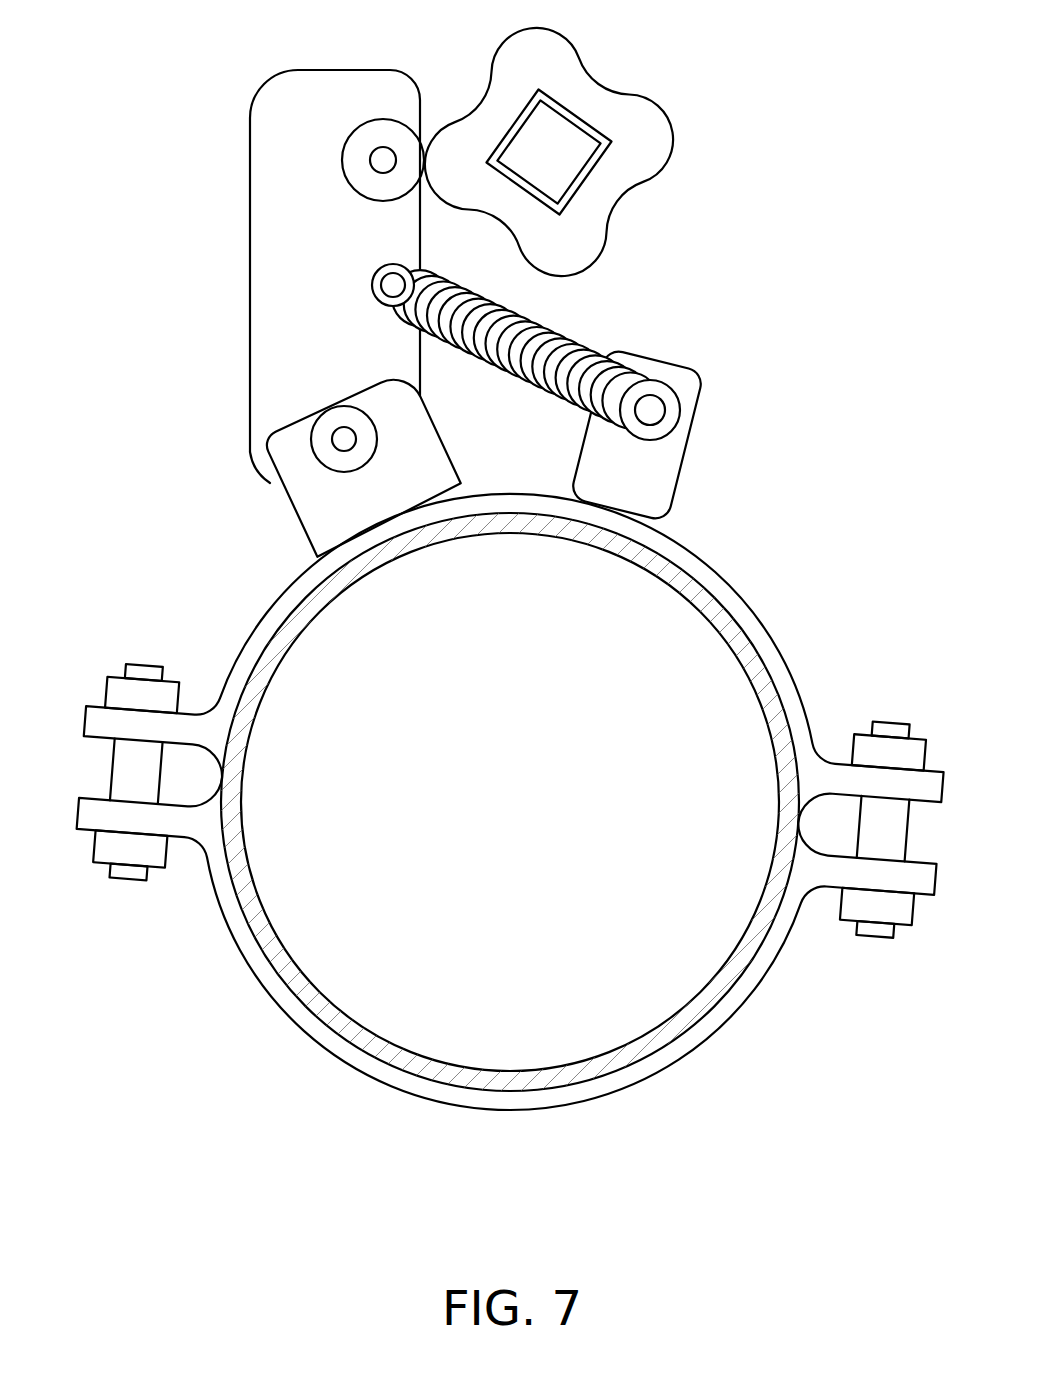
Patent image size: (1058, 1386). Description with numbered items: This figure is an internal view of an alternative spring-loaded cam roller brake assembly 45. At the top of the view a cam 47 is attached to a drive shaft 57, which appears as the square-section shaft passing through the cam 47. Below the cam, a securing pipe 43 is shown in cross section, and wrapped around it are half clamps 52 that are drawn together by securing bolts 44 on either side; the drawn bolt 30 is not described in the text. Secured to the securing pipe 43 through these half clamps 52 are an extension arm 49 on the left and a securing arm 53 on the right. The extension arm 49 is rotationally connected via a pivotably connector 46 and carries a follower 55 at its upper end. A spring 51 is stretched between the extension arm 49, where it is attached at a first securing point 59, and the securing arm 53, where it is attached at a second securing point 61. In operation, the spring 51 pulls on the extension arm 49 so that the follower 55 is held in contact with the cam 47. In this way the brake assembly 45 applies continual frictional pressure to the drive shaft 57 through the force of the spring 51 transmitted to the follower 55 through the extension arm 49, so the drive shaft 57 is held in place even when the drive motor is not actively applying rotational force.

The spring-loaded cam roller brake assembly 45 is at (95, 557).
The securing pipe 43 is at (498, 1024).
The half clamps 52 is at (290, 595).
The bolt 30 is at (128, 879).
The securing bolts 44 is at (876, 936).
The extension arm 49 is at (292, 183).
The follower 55 is at (375, 132).
The cam 47 is at (545, 53).
The drive shaft 57 is at (552, 162).
The first securing point 59 is at (388, 266).
The spring 51 is at (552, 340).
The second securing point 61 is at (673, 403).
The pivotably connector 46 is at (347, 437).
The securing arm 53 is at (658, 486).